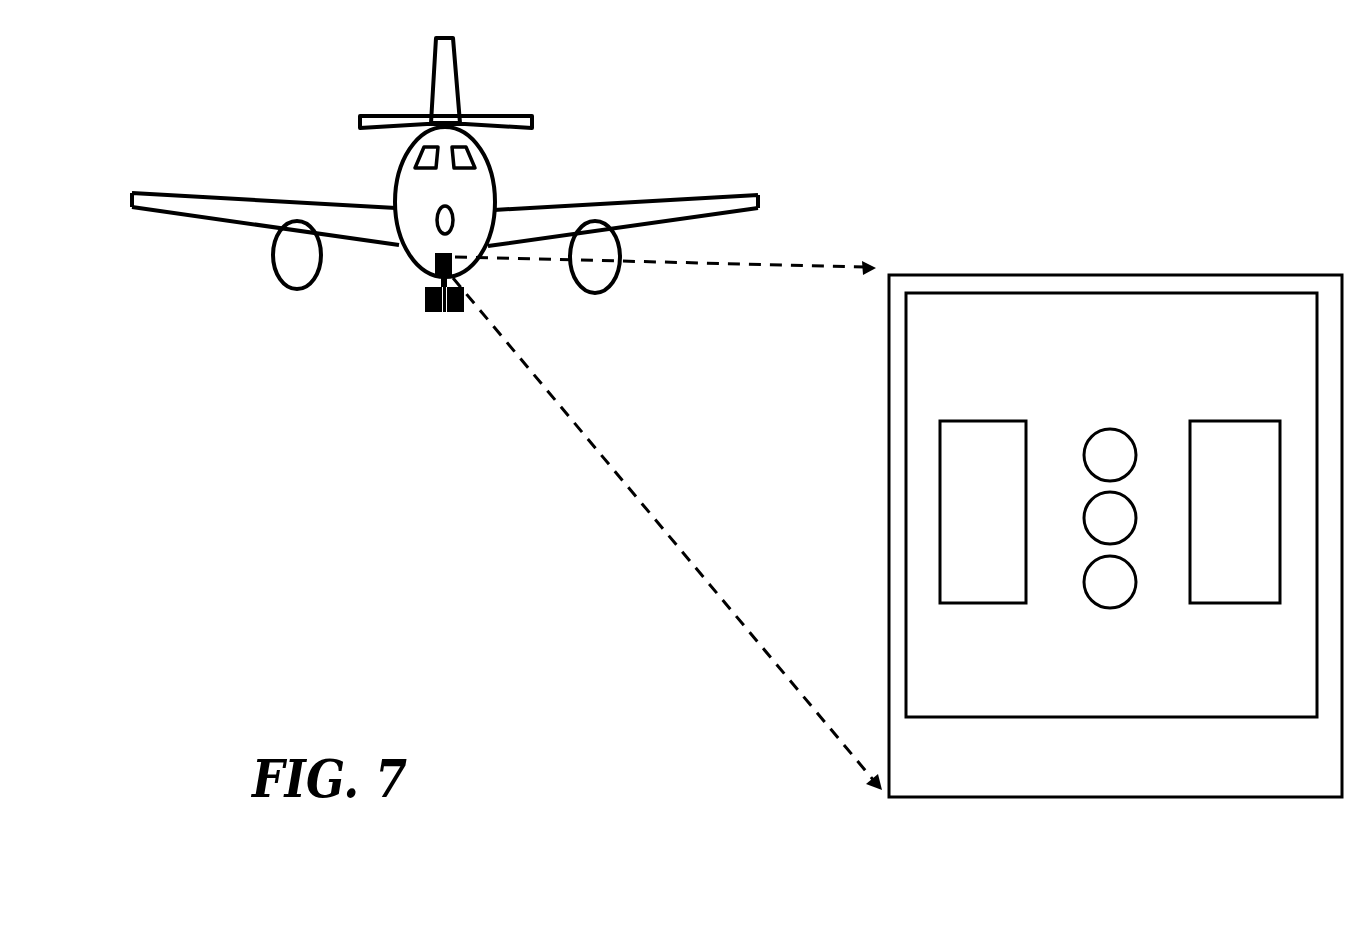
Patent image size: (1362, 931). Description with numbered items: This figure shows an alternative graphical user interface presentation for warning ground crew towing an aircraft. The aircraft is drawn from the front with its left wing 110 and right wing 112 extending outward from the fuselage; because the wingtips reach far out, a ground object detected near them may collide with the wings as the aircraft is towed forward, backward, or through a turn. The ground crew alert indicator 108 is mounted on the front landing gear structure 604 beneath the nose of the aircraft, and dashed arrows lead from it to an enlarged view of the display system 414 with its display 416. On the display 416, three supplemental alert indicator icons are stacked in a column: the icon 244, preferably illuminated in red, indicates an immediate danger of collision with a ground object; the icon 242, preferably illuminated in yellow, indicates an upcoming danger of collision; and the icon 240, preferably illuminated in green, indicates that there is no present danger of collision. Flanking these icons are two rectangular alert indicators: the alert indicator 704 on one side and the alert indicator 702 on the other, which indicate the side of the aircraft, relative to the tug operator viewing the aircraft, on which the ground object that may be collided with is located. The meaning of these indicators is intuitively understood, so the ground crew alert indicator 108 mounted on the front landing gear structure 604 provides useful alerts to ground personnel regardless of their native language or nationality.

The ground crew alert indicator 108 is at (445, 196).
The left wing 110 is at (662, 198).
The right wing 112 is at (235, 199).
The front landing gear structure 604 is at (427, 298).
The display system 414 is at (1282, 778).
The display 416 is at (1000, 715).
The alert indicator 704 is at (982, 408).
The alert indicator 702 is at (1235, 408).
The supplemental alert indicator icon 244 is at (1150, 518).
The supplemental alert indicator icon 242 is at (1131, 545).
The supplemental alert indicator icon 240 is at (1114, 617).